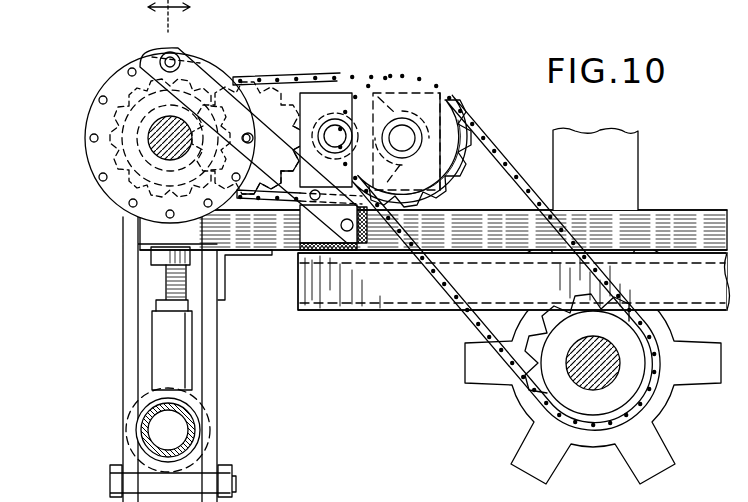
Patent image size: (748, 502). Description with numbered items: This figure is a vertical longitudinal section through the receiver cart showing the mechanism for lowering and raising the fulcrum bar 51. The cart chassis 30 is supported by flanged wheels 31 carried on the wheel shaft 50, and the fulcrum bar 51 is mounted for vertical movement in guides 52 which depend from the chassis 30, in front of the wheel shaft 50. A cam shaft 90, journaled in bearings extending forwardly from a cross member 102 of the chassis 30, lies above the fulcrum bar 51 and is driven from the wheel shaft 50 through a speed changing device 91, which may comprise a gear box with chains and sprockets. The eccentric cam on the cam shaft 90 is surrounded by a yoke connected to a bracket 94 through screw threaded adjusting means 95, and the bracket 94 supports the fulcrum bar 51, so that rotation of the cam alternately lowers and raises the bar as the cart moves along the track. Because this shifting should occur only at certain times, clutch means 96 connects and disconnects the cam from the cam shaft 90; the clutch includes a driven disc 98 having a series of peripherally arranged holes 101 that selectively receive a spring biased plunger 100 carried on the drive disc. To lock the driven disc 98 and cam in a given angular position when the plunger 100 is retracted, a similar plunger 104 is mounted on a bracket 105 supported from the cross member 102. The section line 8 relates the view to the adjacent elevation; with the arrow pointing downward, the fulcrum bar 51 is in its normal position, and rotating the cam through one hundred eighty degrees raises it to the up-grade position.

The section line 8- 8 is at (155, 16).
The cart chassis 30 is at (675, 210).
The flanged wheels 31 is at (700, 395).
The wheel shaft 50 is at (593, 336).
The fulcrum bar 51 is at (195, 418).
The guides 52 is at (123, 350).
The cam shaft 90 is at (150, 128).
The speed changing device 91 is at (410, 58).
The bracket 94 is at (192, 340).
The screw threaded adjusting means 95 is at (163, 275).
The clutch means 96 is at (231, 65).
The driven disc 98 is at (84, 141).
The spring biased plunger 100 is at (200, 97).
The peripherally arranged holes 101 is at (103, 96).
The cross member 102 is at (300, 243).
The plunger 104 is at (176, 55).
The bracket 105 is at (255, 105).